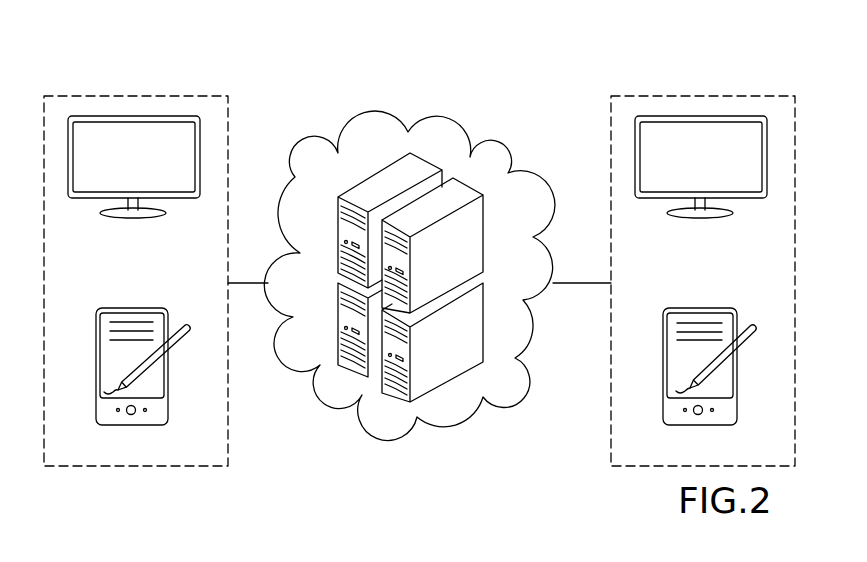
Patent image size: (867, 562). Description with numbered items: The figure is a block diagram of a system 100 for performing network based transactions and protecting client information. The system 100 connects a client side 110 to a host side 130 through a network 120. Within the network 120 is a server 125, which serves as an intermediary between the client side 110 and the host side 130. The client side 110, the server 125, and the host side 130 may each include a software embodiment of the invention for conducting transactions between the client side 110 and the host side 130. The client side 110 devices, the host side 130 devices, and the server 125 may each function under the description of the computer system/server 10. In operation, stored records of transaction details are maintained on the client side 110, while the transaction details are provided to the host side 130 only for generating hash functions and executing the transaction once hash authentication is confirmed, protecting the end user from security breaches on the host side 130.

The system 100 is at (353, 82).
The computer system/server 10 is at (150, 214).
The client side 110 is at (137, 96).
The host side 130 is at (702, 95).
The network 120 is at (443, 425).
The server 125 is at (428, 143).